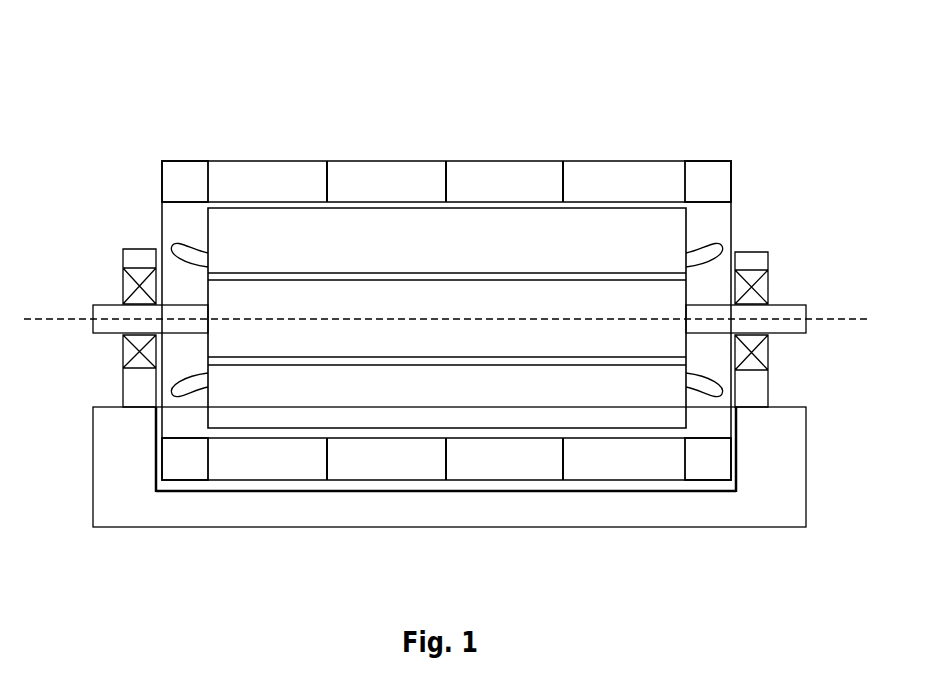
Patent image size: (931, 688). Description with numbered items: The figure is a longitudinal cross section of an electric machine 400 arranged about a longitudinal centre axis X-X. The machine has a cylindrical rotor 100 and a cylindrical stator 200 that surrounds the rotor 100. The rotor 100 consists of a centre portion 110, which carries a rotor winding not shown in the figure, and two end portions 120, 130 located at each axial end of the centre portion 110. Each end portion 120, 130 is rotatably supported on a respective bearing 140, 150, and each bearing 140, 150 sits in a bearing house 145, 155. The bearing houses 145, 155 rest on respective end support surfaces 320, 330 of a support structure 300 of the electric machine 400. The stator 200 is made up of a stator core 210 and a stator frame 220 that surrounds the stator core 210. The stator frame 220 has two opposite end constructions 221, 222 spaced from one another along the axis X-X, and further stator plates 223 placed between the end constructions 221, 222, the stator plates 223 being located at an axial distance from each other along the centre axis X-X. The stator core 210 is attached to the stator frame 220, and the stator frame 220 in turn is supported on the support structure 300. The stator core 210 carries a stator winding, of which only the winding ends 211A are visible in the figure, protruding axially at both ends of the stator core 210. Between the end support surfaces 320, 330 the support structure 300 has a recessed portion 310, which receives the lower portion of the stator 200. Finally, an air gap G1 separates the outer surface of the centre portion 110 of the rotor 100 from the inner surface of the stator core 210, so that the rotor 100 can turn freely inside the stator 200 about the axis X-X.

The electric machine 400 is at (671, 70).
The stator 200 is at (292, 147).
The stator frame 220 is at (757, 176).
The end construction 221 is at (703, 172).
The end construction 222 is at (186, 172).
The stator plates 223 is at (447, 161).
The stator core 210 is at (465, 248).
The winding ends 211A is at (698, 255).
The air gap G1 is at (270, 276).
The centre portion 110 is at (467, 314).
The rotor 100 is at (292, 370).
The end portion 130 is at (103, 328).
The end portion 120 is at (800, 327).
The bearing 150 is at (128, 285).
The bearing house 155 is at (133, 388).
The bearing 140 is at (758, 288).
The bearing house 145 is at (758, 388).
The support structure 300 is at (745, 518).
The recessed portion 310 is at (592, 487).
The end support surface 330 is at (143, 418).
The end support surface 320 is at (761, 418).
The longitudinal centre axis X is at (42, 318).